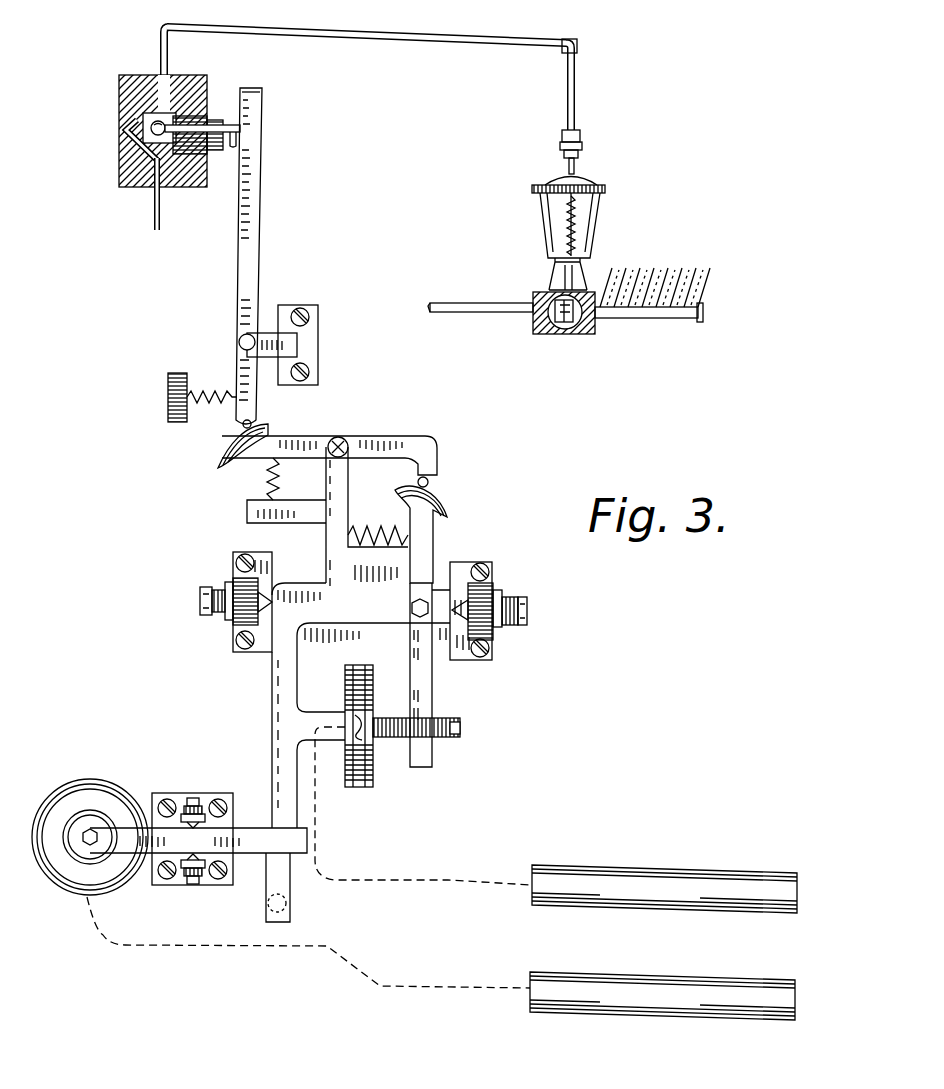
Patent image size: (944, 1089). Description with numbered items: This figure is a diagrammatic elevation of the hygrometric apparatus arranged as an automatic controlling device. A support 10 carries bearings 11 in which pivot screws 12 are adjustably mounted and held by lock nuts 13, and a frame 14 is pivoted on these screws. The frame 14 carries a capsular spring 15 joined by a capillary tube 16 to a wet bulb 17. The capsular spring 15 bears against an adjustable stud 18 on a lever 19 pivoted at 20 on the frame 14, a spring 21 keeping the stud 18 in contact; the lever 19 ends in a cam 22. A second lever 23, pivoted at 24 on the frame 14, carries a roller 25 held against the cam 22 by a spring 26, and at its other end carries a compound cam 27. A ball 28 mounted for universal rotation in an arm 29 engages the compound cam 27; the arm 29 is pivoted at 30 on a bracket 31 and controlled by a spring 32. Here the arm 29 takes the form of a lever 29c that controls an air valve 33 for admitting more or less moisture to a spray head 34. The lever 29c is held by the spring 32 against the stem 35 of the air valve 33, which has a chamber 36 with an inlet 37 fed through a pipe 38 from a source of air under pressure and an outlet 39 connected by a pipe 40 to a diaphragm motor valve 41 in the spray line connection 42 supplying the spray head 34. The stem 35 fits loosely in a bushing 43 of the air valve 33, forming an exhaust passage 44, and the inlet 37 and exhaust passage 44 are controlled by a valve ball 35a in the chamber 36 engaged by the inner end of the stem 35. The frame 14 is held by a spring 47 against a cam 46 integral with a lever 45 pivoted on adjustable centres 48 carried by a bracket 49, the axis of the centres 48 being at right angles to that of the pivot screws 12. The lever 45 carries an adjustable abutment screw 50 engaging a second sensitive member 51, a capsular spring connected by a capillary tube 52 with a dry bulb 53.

The support 10 is at (457, 655).
The bearings 11 is at (483, 596).
The pivot screws 12 is at (525, 603).
The lock nuts 13 is at (498, 595).
The frame 14 is at (361, 637).
The capsular spring 15 is at (353, 682).
The capillary tube 16 is at (452, 882).
The wet bulb 17 is at (607, 877).
The adjustable stud 18 is at (458, 718).
The lever 19 is at (418, 763).
The pivot 20 is at (423, 602).
The spring 21 is at (383, 513).
The cam 22 is at (443, 500).
The second lever 23 is at (407, 450).
The pivot 24 is at (345, 442).
The roller 25 is at (430, 482).
The spring 26 is at (263, 478).
The compound cam 27 is at (222, 443).
The ball 28 is at (257, 413).
The arm 29 is at (235, 367).
The lever 29c is at (250, 262).
The pivot 30 is at (238, 338).
The bracket 31 is at (320, 340).
The spring 32 is at (212, 428).
The air valve 33 is at (143, 183).
The spray head 34 is at (652, 320).
The stem 35 is at (237, 140).
The valve ball 35a is at (122, 183).
The chamber 36 is at (160, 110).
The inlet 37 is at (142, 142).
The pipe 38 is at (160, 218).
The outlet 39 is at (167, 62).
The pipe 40 is at (462, 40).
The diaphragm motor valve 41 is at (563, 337).
The spray line connection 42 is at (470, 303).
The bushing 43 is at (220, 117).
The exhaust passage 44 is at (242, 125).
The lever 45 is at (252, 853).
The cam 46 is at (293, 867).
The spring 47 is at (282, 910).
The centres 48 is at (193, 795).
The bracket 49 is at (162, 793).
The screw 50 is at (87, 840).
The second sensitive member 51 is at (85, 783).
The capillary tube 52 is at (225, 948).
The dry bulb 53 is at (632, 982).